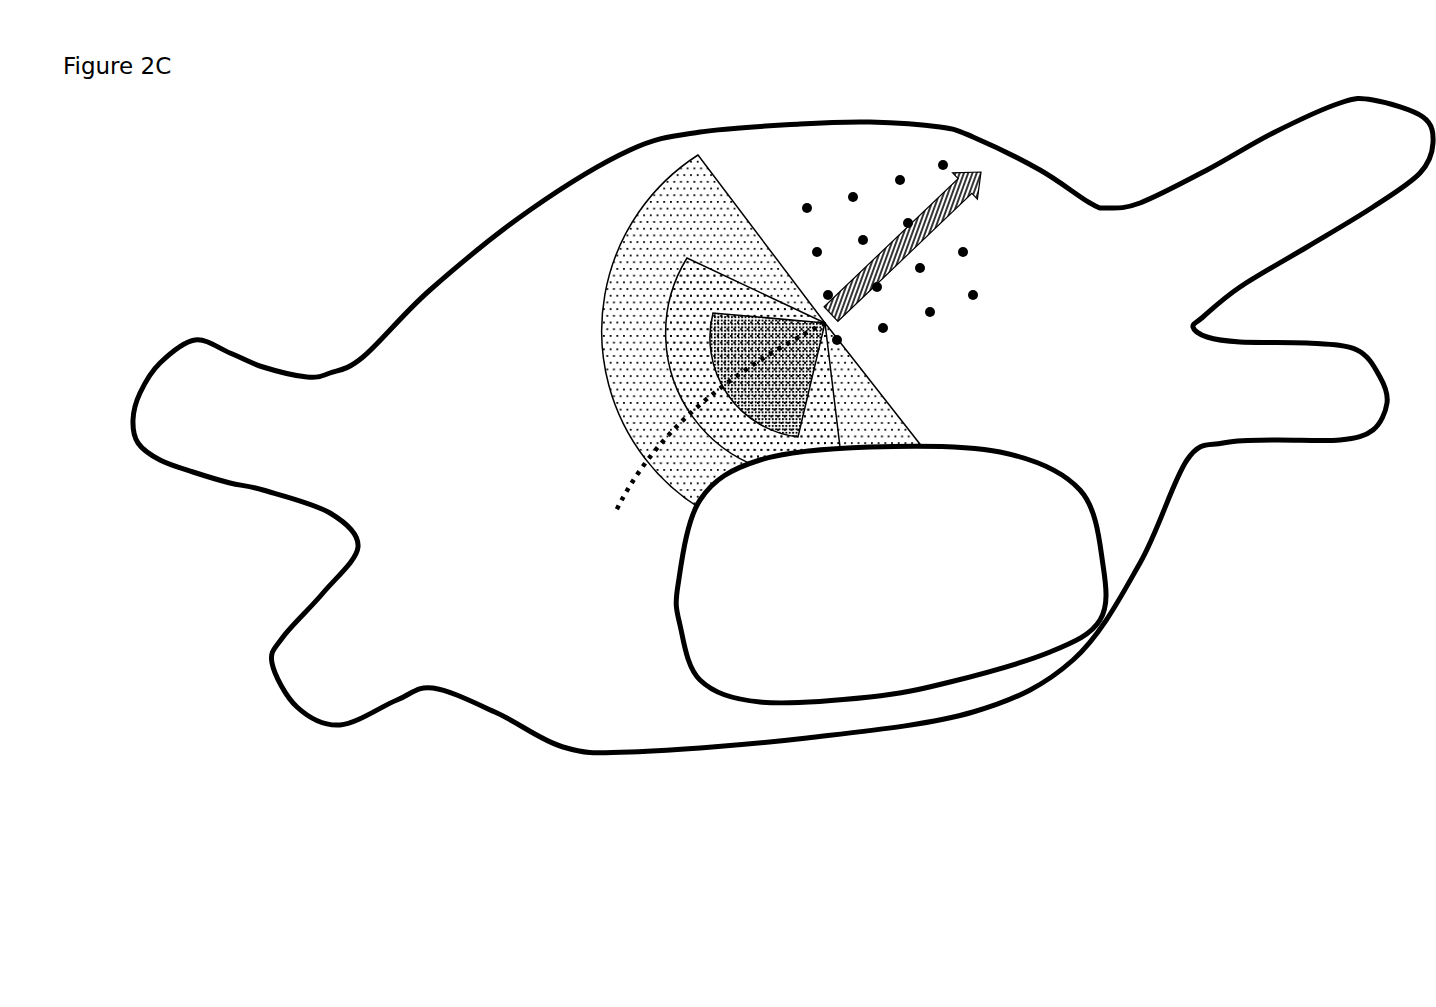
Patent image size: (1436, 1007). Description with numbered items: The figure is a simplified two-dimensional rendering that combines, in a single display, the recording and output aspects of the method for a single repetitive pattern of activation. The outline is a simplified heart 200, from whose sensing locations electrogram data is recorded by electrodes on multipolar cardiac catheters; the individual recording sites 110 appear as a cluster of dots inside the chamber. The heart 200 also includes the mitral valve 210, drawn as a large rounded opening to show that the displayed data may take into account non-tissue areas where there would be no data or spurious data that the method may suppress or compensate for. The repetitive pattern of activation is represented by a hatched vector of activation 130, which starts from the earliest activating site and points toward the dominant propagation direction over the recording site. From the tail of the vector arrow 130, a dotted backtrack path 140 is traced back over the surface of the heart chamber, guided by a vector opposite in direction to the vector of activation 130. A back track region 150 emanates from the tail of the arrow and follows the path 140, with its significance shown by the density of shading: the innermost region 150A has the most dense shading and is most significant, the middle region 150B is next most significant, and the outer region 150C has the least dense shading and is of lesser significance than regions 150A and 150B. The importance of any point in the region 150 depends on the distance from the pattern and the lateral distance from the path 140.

The site 110 is at (935, 311).
The vector of activation 130 is at (978, 188).
The path 140 is at (680, 420).
The back track region 150 is at (872, 305).
The most significant region 150A is at (775, 313).
The next most significant region 150B is at (680, 315).
The least significant region 150C is at (708, 232).
The heart 200 is at (510, 717).
The mitral valve 210 is at (932, 675).